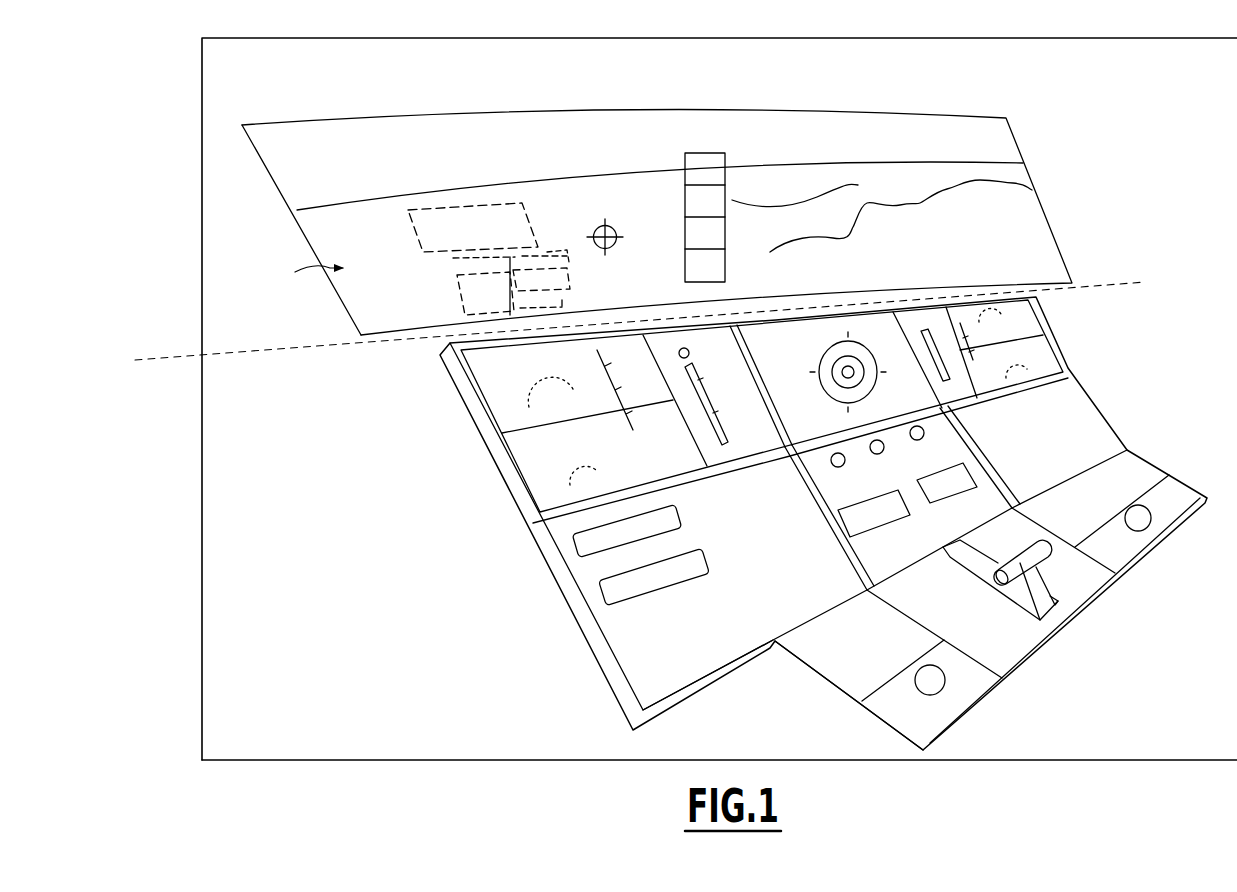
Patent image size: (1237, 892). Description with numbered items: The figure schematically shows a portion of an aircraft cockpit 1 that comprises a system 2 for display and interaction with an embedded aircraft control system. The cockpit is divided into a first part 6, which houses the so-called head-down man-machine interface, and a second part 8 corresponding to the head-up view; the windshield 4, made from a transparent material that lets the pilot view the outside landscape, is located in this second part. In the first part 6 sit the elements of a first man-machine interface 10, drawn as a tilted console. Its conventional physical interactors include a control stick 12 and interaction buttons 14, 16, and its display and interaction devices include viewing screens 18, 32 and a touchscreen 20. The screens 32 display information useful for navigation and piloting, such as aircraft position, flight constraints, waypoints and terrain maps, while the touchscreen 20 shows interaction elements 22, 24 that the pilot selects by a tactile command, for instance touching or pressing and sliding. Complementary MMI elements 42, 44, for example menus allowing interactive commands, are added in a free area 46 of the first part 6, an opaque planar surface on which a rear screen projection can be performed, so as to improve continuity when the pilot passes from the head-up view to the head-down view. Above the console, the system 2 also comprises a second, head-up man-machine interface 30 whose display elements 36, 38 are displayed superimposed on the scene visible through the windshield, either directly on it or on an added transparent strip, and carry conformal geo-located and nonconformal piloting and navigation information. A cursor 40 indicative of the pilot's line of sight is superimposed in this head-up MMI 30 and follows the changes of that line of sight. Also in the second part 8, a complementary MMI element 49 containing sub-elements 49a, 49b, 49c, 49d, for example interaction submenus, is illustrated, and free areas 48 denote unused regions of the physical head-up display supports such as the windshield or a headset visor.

The aircraft cockpit 1 is at (198, 478).
The system for display and interaction 2 is at (1148, 379).
The windshield 4 is at (308, 270).
The first part 6 is at (335, 722).
The second part 8 is at (250, 318).
The first man-machine interface 10 is at (1018, 478).
The control stick 12 is at (1037, 588).
The interaction button 14 is at (947, 681).
The interaction button 16 is at (1145, 521).
The viewing screen 18 is at (853, 662).
The touchscreen 20 is at (803, 504).
The interaction element 22 is at (947, 432).
The interaction element 24 is at (960, 483).
The second man-machine interface 30 is at (1053, 233).
The screen 32 is at (838, 310).
The display element 36 is at (707, 166).
The display element 38 is at (463, 207).
The cursor 40 is at (620, 226).
The complementary MMI element 42 is at (587, 548).
The complementary MMI element 44 is at (600, 602).
The free area 46 is at (647, 663).
The free area 48 is at (355, 300).
The complementary MMI element 49 is at (460, 294).
The sub-element 49a is at (458, 260).
The sub-element 49b is at (548, 256).
The sub-element 49c is at (570, 278).
The sub-element 49d is at (566, 301).